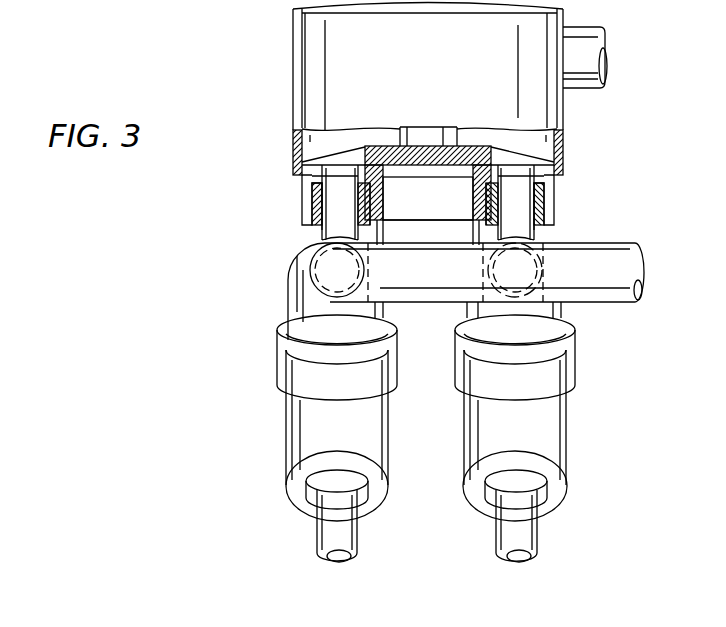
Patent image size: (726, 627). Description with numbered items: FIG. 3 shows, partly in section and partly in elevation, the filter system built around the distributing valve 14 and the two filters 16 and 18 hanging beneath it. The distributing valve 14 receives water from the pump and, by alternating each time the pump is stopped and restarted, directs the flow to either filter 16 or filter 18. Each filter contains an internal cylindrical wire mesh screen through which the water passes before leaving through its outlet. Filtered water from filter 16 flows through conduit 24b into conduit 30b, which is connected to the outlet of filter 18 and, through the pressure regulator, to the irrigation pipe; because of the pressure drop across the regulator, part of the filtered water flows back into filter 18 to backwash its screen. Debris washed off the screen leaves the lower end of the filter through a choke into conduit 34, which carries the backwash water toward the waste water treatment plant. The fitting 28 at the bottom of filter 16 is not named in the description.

The distributing valve 14 is at (303, 73).
The conduit 24b is at (424, 243).
The conduit 30b is at (620, 243).
The filter 16 is at (283, 428).
The filter 18 is at (569, 421).
The first nozzle 28 is at (357, 544).
The conduit 34 is at (537, 538).